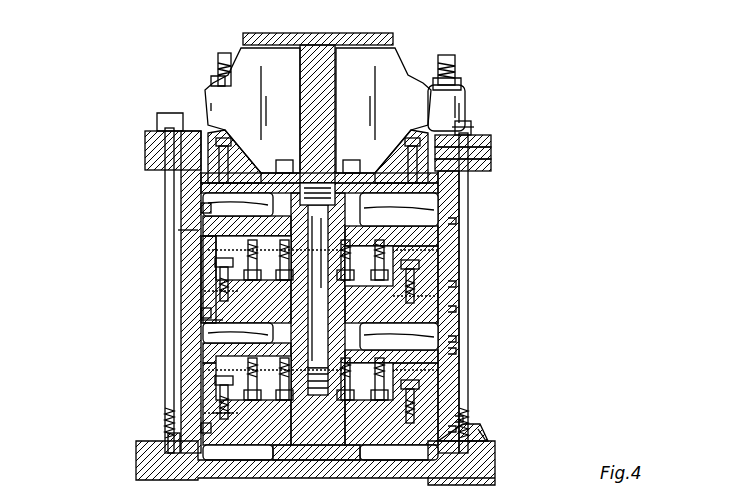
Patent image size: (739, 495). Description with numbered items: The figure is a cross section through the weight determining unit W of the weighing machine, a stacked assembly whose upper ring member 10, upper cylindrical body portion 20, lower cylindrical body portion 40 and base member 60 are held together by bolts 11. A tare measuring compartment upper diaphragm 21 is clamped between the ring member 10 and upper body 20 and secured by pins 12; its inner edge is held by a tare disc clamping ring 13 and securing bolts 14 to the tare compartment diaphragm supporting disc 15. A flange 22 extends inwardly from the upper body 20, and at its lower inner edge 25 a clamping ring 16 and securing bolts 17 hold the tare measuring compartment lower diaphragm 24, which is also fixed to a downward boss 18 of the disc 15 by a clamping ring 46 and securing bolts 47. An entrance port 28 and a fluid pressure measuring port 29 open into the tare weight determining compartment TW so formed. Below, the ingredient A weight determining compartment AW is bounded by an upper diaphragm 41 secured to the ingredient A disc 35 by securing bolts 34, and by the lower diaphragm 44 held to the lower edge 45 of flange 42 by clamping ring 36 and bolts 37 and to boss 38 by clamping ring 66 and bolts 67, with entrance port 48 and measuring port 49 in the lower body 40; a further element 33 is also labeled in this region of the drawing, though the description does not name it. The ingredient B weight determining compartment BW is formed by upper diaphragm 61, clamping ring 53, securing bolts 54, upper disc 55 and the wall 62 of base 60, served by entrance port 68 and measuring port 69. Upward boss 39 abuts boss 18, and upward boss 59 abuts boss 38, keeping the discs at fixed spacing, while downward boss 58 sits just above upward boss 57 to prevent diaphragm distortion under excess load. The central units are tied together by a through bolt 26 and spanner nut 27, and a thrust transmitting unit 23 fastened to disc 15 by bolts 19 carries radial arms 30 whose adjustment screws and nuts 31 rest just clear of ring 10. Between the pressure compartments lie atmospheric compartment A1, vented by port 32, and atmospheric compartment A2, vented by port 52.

The integral radial arms 30 is at (244, 50).
The adjustment screws and nuts 31 is at (212, 60).
The thrust transmitting unit 23 is at (329, 86).
The bolts 11 is at (462, 112).
The upper ring member 10 is at (484, 130).
The securing bolts 14 is at (484, 140).
The tare disc clamping ring 13 is at (484, 150).
The pins 12 is at (460, 160).
The weight determining unit W is at (98, 118).
The bolts 19 is at (165, 176).
The tare measuring compartment upper diaphragm 21 is at (462, 172).
The spanner nut 27 is at (190, 190).
The entrance port 28 is at (462, 198).
The through bolt 26 is at (193, 215).
The flange 22 is at (455, 212).
The securing bolts 17 is at (195, 232).
The upper cylindrical body portion 20 is at (462, 225).
The flange 42 is at (200, 345).
The clamping ring 53 is at (196, 412).
The boss 18 is at (352, 206).
The clamping ring 46 is at (322, 288).
The tare measuring compartment lower diaphragm 24 is at (462, 255).
The lower edge 45 is at (455, 365).
The upper diaphragm 41 is at (207, 272).
The clamping ring 36 is at (207, 385).
The securing bolts 34 is at (455, 285).
The downwardly extending boss 58 is at (135, 455).
The wall 62 is at (488, 470).
The upper disc 55 is at (155, 440).
The upwardly extending boss 57 is at (470, 450).
The base member 60 is at (478, 437).
The upper diaphragm 61 is at (462, 408).
The entrance port 68 is at (455, 420).
The port 52 is at (462, 380).
The lower cylindrical body portion 40 is at (462, 355).
The ingredient A weight determining compartment disc 35 is at (455, 342).
The entrance port 48 is at (462, 330).
The spacer 33 is at (462, 300).
The port 32 is at (462, 275).
The clamping ring 16 is at (455, 265).
The lower inner edge 25 is at (455, 240).
The tare compartment diaphragm supporting disc 15 is at (455, 185).
The fluid pressure measuring port 29 is at (190, 198).
The tare weight determining compartment TW is at (165, 225).
The atmospheric compartment A1 is at (200, 225).
The upwardly extending boss 39 is at (196, 262).
The ingredient A weight determining compartment AW is at (180, 295).
The fluid pressure measuring port 49 is at (190, 302).
The bolts 67 is at (190, 312).
The bolts 37 is at (196, 350).
The atmospheric compartment A2 is at (200, 362).
The ingredient A weight determining compartment lower diaphragm 44 is at (200, 372).
The securing bolts 54 is at (205, 406).
The fluid pressure measuring port 69 is at (190, 420).
The ingredient B weight determining compartment BW is at (205, 444).
The securing bolts 47 is at (386, 214).
The boss 38 is at (358, 328).
The clamping ring 66 is at (392, 340).
The upwardly extending boss 59 is at (335, 403).